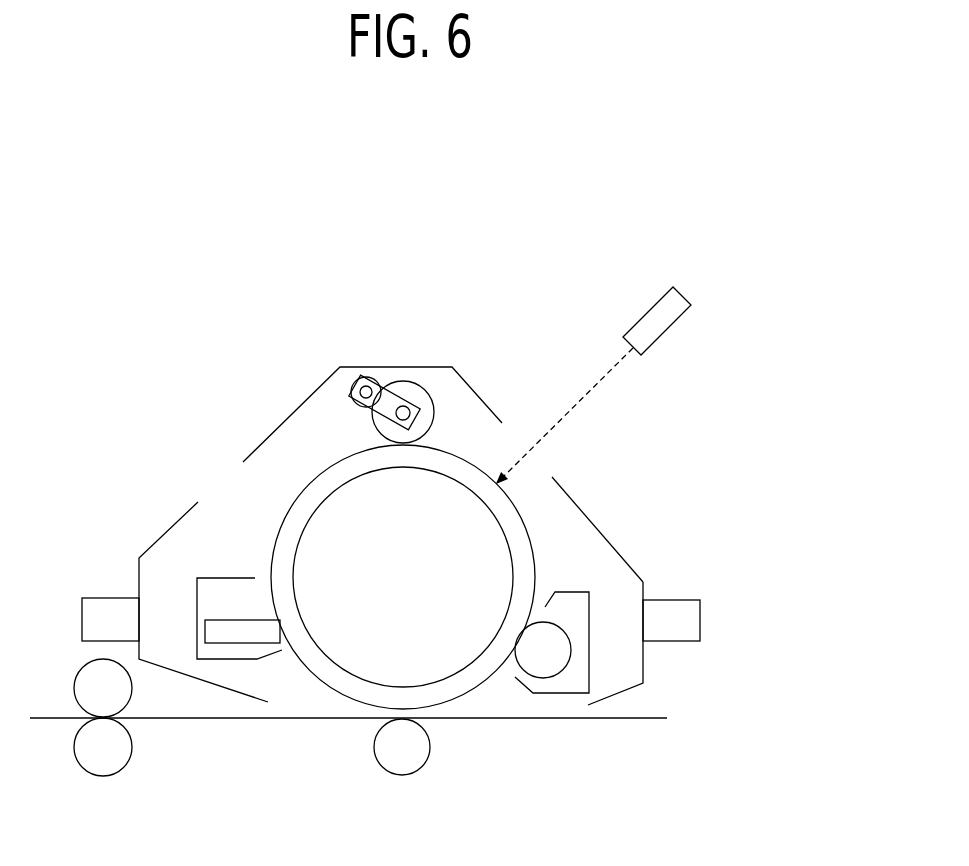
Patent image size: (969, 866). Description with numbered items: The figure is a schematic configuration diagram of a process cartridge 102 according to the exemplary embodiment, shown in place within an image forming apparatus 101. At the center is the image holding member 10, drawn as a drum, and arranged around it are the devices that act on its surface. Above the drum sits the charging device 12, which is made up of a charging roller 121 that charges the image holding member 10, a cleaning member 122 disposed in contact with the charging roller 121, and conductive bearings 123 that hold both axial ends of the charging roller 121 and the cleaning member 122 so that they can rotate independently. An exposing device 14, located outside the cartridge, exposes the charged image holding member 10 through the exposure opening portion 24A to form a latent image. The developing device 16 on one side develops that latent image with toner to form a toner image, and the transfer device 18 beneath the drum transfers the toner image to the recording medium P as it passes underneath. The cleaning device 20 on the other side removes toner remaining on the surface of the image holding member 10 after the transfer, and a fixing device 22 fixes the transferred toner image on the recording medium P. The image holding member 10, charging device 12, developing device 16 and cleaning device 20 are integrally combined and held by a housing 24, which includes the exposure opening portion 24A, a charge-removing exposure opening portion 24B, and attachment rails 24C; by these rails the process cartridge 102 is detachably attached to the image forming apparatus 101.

The image forming apparatus 101 is at (492, 238).
The image holding member 10 is at (316, 470).
The charging device 12 is at (389, 378).
The charging roller 121 is at (417, 397).
The cleaning member 122 is at (360, 378).
The conductive bearings 123 is at (392, 395).
The exposing device 14 is at (662, 323).
The developing device 16 is at (545, 607).
The transfer device 18 is at (402, 775).
The cleaning device 20 is at (227, 578).
The fixing device 22 is at (103, 776).
The housing 24 is at (610, 540).
The exposure opening portion 24A is at (512, 425).
The charge-removing exposure opening portion 24B is at (212, 478).
The attachment rail 24C is at (101, 598).
The process cartridge 102 is at (568, 496).
The recording medium P is at (608, 720).